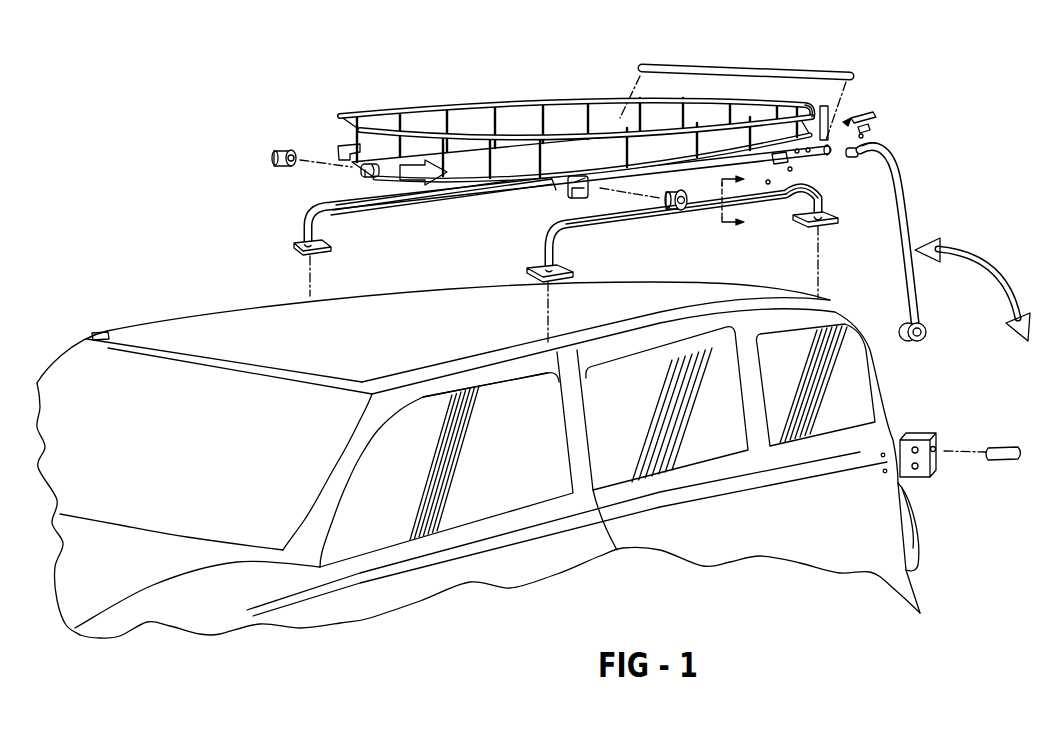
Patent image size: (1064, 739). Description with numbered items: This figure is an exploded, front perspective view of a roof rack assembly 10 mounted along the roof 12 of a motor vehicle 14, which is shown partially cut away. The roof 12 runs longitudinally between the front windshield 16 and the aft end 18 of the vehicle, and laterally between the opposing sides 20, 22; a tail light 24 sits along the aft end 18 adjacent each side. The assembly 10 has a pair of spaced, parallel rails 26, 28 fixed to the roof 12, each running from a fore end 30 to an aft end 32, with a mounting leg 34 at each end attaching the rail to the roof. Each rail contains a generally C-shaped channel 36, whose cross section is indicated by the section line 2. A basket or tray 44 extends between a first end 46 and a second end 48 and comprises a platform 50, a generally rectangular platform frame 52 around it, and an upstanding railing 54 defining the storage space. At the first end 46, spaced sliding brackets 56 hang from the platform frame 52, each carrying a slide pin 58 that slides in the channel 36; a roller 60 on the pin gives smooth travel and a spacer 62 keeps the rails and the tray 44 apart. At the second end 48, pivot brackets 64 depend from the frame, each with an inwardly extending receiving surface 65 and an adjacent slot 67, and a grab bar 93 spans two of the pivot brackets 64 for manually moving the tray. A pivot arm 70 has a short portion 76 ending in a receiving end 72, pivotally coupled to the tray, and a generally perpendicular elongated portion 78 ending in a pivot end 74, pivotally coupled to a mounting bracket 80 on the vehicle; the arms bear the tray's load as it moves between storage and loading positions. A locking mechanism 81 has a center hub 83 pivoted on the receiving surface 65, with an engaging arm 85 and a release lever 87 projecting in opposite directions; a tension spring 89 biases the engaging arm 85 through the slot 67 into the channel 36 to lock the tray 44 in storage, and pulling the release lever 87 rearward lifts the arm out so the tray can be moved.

The section line 2- 2 is at (733, 202).
The roof rack assembly 10 is at (979, 142).
The roof 12 is at (434, 329).
The motor vehicle 14 is at (212, 570).
The front windshield 16 is at (190, 360).
The aft end 18 is at (822, 306).
The side 20 is at (255, 305).
The side 22 is at (503, 366).
The tail light 24 is at (913, 507).
The rail 26 is at (458, 200).
The rail 28 is at (657, 220).
The fore end 30 is at (326, 203).
The aft end 32 is at (813, 180).
The mounting leg 34 is at (296, 243).
The channel 36 is at (387, 207).
The tray 44 is at (514, 101).
The first end 46 is at (580, 198).
The second end 48 is at (808, 106).
The platform 50 is at (590, 159).
The platform frame 52 is at (675, 140).
The railing 54 is at (340, 148).
The sliding bracket 56 is at (372, 180).
The slide pin 58 is at (358, 174).
The roller 60 is at (270, 158).
The spacer 62 is at (292, 150).
The pivot bracket 64 is at (785, 163).
The receiving surface 65 is at (790, 170).
The slot 67 is at (767, 181).
The pivot arm 70 is at (938, 256).
The receiving end 72 is at (860, 152).
The pivot end 74 is at (927, 332).
The short portion 76 is at (884, 153).
The elongated portion 78 is at (901, 262).
The mounting bracket 80 is at (930, 473).
The locking mechanism 81 is at (837, 120).
The center hub 83 is at (876, 114).
The engaging arm 85 is at (871, 128).
The release lever 87 is at (868, 113).
The tension spring 89 is at (863, 136).
The grab bar 93 is at (790, 66).